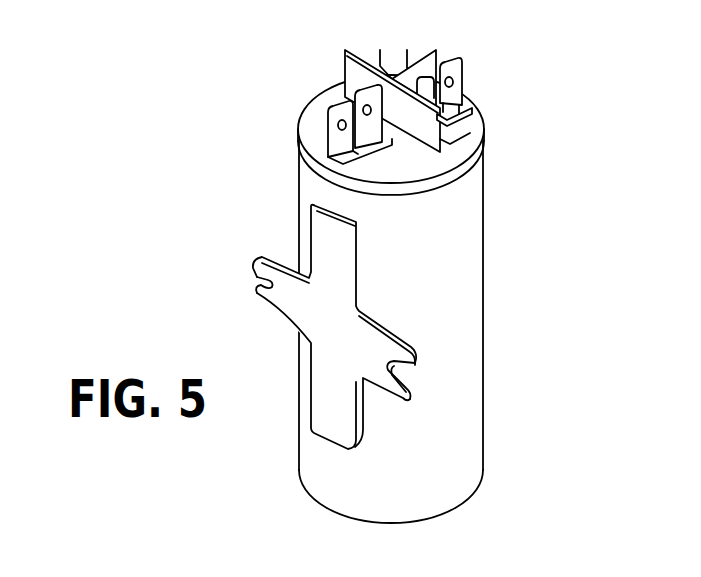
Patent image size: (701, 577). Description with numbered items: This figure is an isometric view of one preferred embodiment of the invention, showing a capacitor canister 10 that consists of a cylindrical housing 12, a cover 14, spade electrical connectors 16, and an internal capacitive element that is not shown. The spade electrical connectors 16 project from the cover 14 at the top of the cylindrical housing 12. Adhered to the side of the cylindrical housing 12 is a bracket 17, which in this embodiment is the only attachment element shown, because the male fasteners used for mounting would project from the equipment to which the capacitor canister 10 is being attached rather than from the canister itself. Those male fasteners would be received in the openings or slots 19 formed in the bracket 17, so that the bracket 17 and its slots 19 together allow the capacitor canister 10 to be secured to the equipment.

The capacitor canister 10 is at (365, 271).
The cylindrical housing 12 is at (470, 309).
The cover 14 is at (418, 163).
The spade electrical connectors 16 is at (331, 124).
The bracket 17 is at (357, 335).
The openings or slots 19 is at (260, 285).